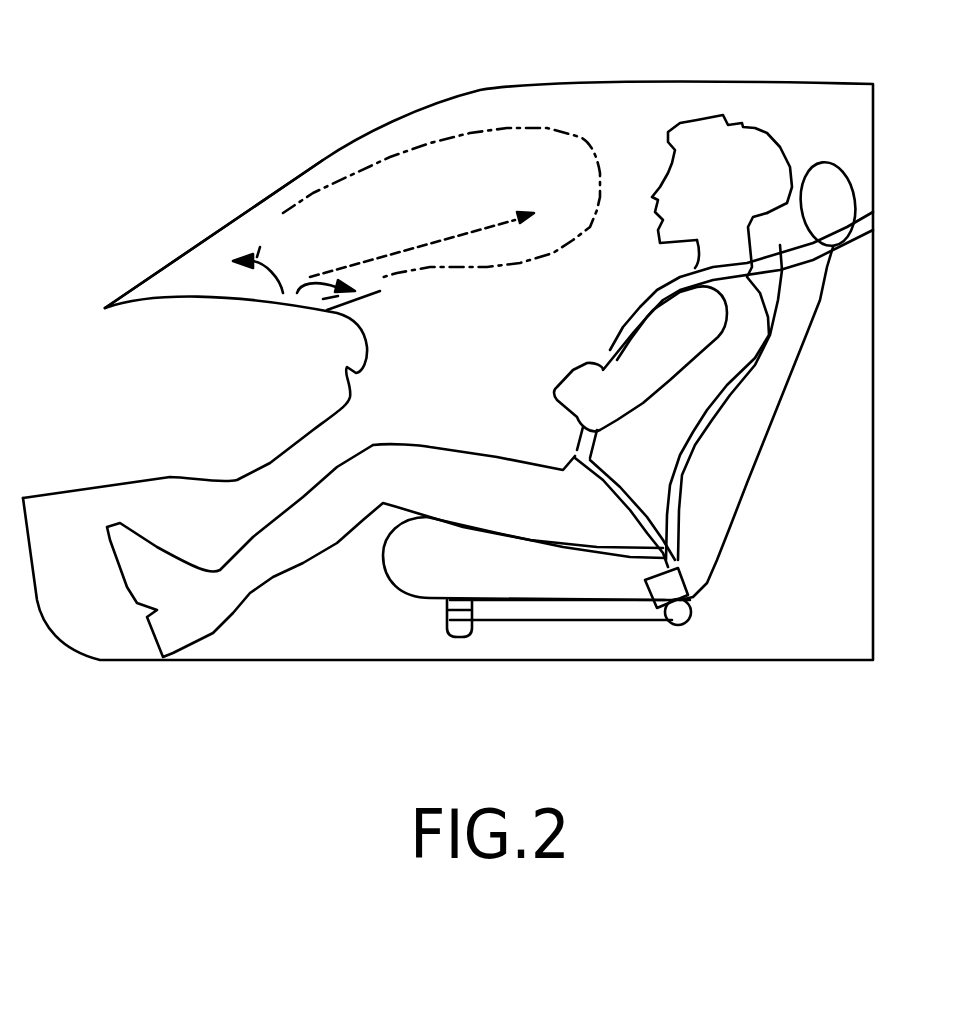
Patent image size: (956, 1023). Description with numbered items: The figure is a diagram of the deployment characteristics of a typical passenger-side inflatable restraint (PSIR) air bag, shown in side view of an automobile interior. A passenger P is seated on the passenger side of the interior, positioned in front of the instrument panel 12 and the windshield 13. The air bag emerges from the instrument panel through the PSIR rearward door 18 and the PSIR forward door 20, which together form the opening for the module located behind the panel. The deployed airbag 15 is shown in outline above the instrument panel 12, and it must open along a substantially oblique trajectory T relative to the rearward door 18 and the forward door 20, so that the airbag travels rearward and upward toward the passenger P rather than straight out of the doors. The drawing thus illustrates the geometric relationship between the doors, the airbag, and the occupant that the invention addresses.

The instrument panel 12 is at (188, 247).
The windshield 13 is at (323, 160).
The deployed airbag 15 is at (608, 110).
The PSIR rearward door 18 is at (380, 293).
The PSIR forward door 20 is at (243, 297).
The trajectory T is at (422, 218).
The passenger P is at (687, 405).